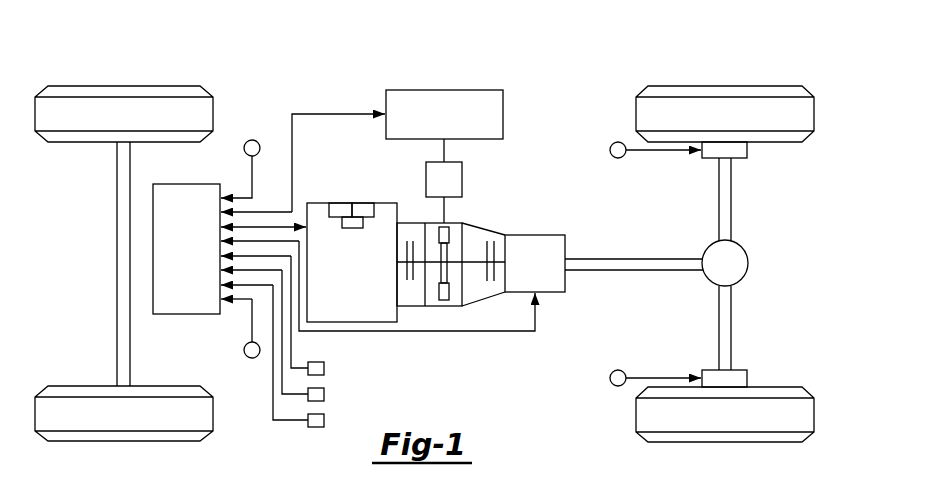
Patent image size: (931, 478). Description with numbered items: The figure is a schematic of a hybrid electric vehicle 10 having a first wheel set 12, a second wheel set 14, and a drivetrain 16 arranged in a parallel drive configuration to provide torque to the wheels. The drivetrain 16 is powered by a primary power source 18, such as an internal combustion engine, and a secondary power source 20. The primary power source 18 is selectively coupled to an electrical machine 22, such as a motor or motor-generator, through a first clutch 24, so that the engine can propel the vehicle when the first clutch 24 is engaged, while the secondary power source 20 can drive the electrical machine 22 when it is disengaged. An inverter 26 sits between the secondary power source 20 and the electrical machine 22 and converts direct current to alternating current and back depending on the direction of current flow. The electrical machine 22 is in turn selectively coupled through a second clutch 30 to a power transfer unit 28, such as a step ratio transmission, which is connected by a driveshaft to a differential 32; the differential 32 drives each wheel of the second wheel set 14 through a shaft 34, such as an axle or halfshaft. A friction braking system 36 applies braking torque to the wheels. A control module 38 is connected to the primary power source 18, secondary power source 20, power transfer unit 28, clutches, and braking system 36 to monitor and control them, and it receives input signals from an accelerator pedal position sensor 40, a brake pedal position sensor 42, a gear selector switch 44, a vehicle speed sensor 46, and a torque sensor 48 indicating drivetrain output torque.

The hybrid electric vehicle 10 is at (268, 62).
The first wheel set 12 is at (112, 64).
The second wheel set 14 is at (694, 58).
The drivetrain 16 is at (388, 66).
The primary power source 18 is at (337, 276).
The secondary power source 20 is at (436, 124).
The electrical machine 22 is at (444, 301).
The first clutch 24 is at (411, 222).
The inverter 26 is at (435, 192).
The power transfer unit 28 is at (526, 272).
The second clutch 30 is at (478, 226).
The differential 32 is at (716, 274).
The shaft 34 is at (718, 212).
The friction braking system 36 is at (706, 160).
The control module 38 is at (177, 263).
The sensor 40 is at (324, 368).
The sensor 42 is at (324, 394).
The gear selector switch 44 is at (324, 420).
The vehicle speed sensor 46 is at (338, 203).
The torque sensor 48 is at (358, 203).